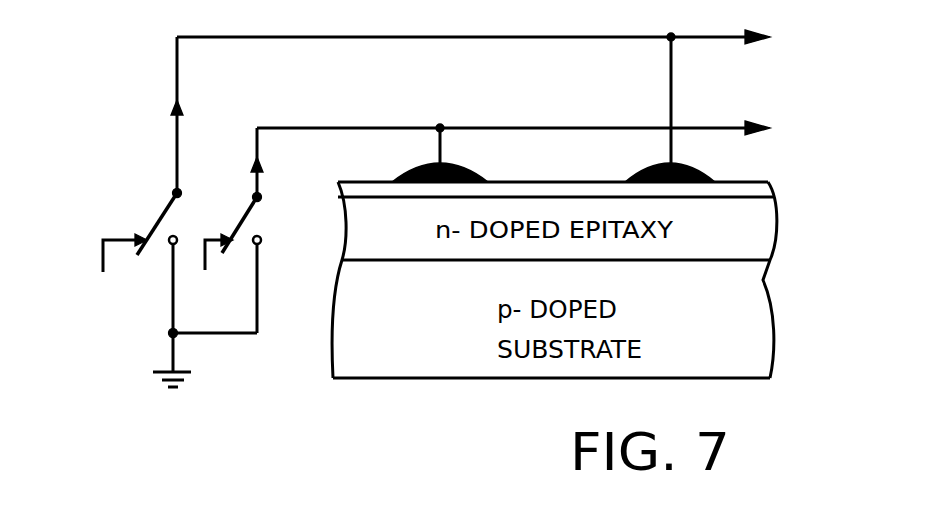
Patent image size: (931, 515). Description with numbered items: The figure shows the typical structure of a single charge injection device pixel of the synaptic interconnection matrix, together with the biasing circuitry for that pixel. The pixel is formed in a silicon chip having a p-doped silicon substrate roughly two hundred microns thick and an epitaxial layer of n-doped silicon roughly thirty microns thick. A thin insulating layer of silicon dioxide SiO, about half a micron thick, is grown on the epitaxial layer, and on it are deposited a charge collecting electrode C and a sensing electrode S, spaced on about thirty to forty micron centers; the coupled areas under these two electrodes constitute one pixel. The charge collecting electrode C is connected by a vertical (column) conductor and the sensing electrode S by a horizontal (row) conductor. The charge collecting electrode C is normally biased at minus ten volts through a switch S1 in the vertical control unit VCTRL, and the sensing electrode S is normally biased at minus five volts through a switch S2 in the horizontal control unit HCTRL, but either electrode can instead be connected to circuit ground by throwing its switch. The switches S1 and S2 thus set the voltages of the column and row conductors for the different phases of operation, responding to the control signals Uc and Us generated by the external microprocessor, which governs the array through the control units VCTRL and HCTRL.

The control signal Uc is at (470, 97).
The control signal Us is at (510, 143).
The switch S1 is at (150, 224).
The switch S2 is at (230, 237).
The sensing electrode S is at (473, 166).
The charge collecting electrode C is at (707, 167).
The silicon dioxide layer SiO is at (780, 190).
The vertical control unit VCTRL is at (122, 362).
The horizontal control unit HCTRL is at (273, 364).